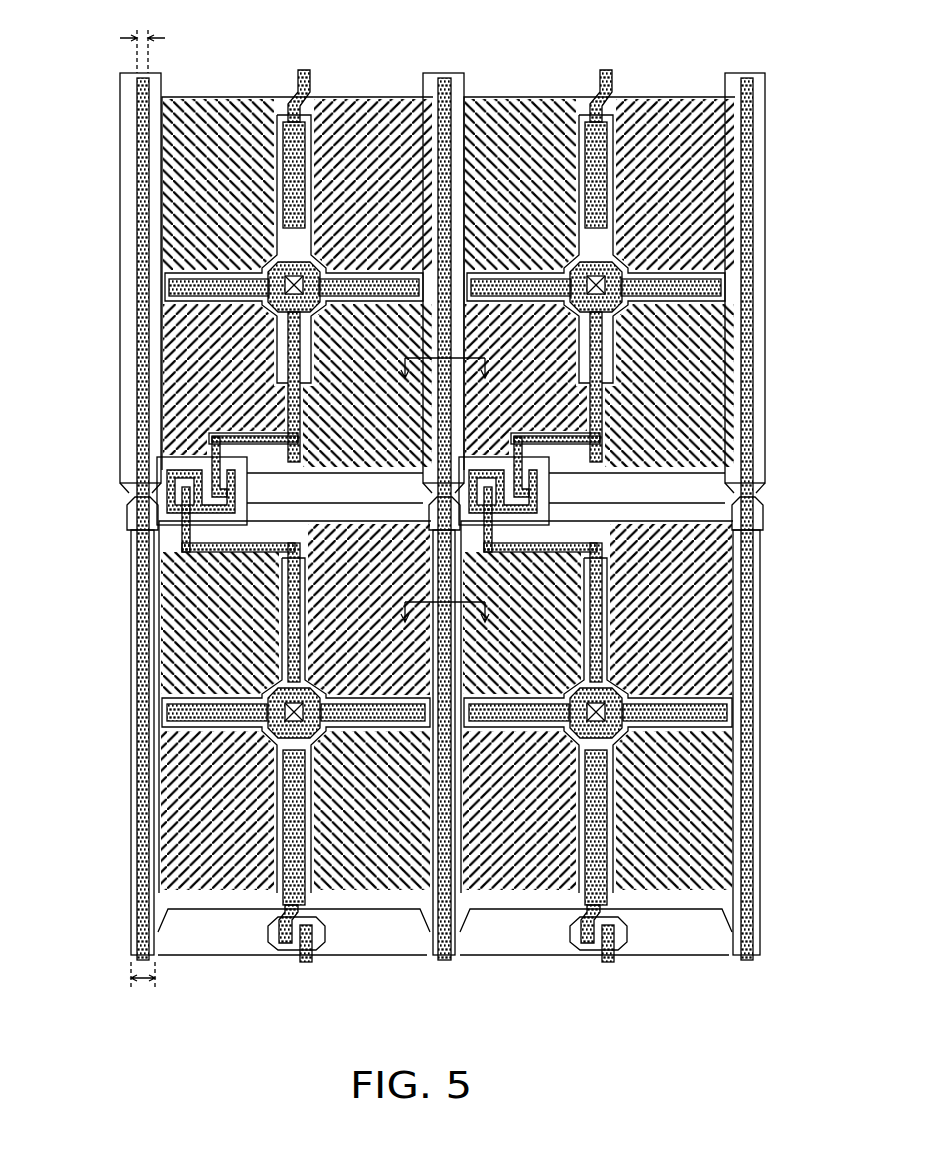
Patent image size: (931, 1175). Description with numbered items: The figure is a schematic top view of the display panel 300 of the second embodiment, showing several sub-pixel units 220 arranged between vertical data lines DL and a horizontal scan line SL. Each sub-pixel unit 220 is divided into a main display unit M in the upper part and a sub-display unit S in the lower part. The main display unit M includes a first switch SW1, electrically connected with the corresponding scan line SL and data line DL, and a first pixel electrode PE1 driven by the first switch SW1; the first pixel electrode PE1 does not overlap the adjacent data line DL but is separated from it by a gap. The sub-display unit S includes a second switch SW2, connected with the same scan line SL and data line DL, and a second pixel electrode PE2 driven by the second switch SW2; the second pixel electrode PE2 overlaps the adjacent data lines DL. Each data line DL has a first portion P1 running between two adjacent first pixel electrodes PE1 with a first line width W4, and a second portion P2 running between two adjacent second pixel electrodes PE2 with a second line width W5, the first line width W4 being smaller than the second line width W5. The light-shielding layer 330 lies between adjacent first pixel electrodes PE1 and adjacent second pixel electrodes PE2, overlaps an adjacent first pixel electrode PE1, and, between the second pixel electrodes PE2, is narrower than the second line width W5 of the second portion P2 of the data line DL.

The display panel 300 is at (438, 515).
The sub-pixel unit 220 is at (499, 485).
The light-shielding layer 330 is at (125, 90).
The data line DL is at (401, 513).
The first portion P1 is at (140, 457).
The second portion P2 is at (133, 557).
The scan line SL is at (705, 490).
The main display unit M is at (499, 297).
The sub-display unit S is at (499, 724).
The first pixel electrode PE1 is at (683, 347).
The first switch SW1 is at (557, 487).
The second pixel electrode PE2 is at (690, 740).
The second switch SW2 is at (555, 528).
The first line width W4 is at (142, 38).
The second line width W5 is at (141, 992).